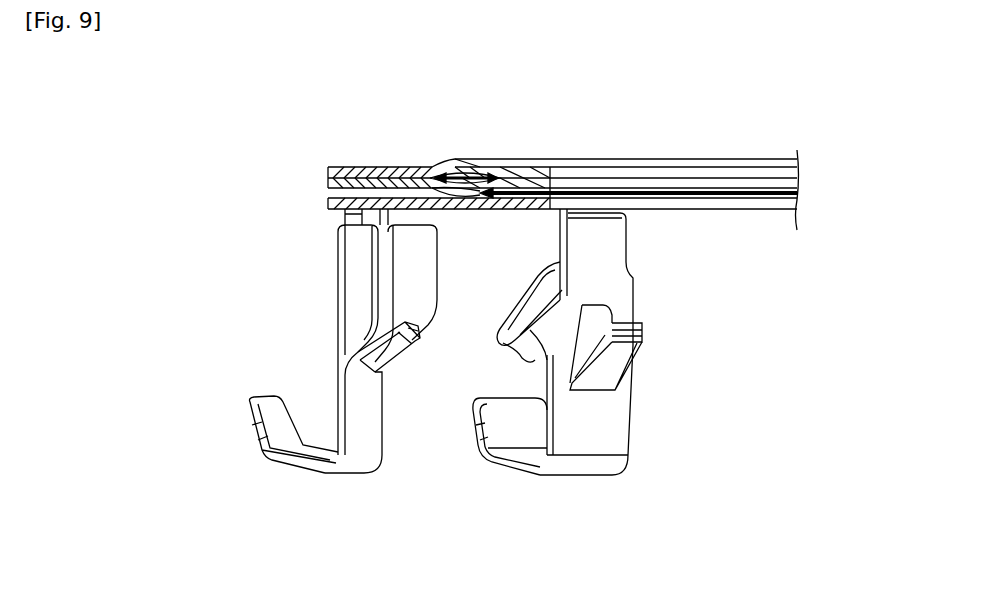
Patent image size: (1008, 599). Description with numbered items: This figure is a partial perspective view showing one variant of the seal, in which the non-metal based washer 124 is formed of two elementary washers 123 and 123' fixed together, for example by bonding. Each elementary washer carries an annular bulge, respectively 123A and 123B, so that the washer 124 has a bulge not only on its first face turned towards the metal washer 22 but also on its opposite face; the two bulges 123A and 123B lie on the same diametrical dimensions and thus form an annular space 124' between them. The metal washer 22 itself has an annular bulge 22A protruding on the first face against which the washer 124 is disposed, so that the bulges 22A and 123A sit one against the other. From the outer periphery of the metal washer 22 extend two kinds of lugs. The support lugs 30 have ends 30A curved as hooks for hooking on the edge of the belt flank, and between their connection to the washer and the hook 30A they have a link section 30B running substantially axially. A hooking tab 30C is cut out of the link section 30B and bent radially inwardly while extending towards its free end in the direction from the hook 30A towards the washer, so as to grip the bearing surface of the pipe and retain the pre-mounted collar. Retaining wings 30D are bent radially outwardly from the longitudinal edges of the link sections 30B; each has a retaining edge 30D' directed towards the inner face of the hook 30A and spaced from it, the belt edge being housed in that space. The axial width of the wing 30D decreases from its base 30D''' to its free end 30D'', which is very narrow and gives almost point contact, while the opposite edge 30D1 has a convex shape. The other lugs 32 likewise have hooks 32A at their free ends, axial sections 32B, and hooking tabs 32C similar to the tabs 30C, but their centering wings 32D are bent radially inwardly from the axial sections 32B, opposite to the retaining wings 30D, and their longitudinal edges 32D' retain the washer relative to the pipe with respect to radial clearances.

The non-metal based washer 124 is at (511, 164).
The elementary washer 123 is at (512, 195).
The elementary washer 123' is at (364, 143).
The annular bulge 123A is at (421, 185).
The annular bulge 123B is at (463, 160).
The annular space 124' is at (506, 153).
The annular bulge 22A is at (492, 188).
The metal washer 22 is at (743, 204).
The lug 32 is at (379, 387).
The centering wing 32D is at (315, 332).
The longitudinal edge 32D' is at (445, 293).
The hooking tab 32C is at (392, 362).
The axial section 32B is at (370, 405).
The hook 32A is at (295, 472).
The support lug 30 is at (586, 384).
The retaining wing 30D is at (560, 277).
The edge of the retaining wing 30D1 is at (562, 262).
The free end of the retaining wing 30D'' is at (501, 303).
The retaining edge 30D' is at (508, 363).
The base of the retaining wing 30D''' is at (667, 309).
The hooking tab 30C is at (635, 350).
The link section 30B is at (610, 427).
The hook 30A is at (520, 470).